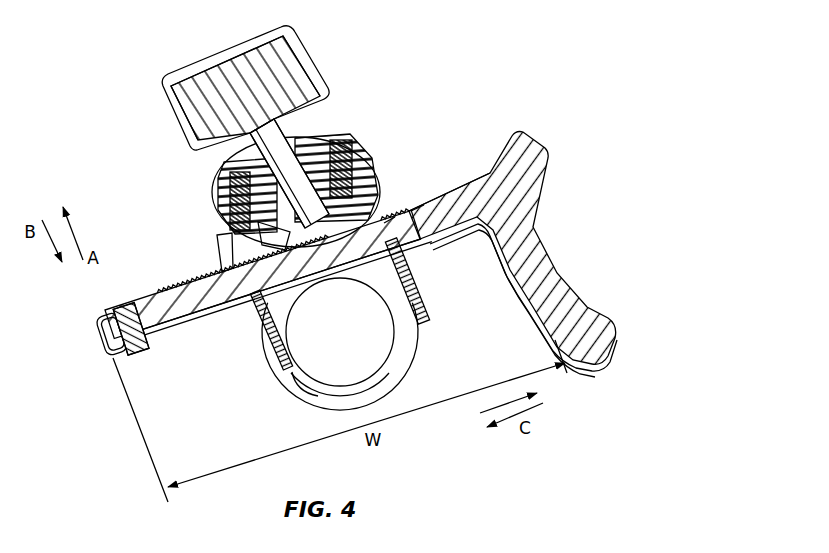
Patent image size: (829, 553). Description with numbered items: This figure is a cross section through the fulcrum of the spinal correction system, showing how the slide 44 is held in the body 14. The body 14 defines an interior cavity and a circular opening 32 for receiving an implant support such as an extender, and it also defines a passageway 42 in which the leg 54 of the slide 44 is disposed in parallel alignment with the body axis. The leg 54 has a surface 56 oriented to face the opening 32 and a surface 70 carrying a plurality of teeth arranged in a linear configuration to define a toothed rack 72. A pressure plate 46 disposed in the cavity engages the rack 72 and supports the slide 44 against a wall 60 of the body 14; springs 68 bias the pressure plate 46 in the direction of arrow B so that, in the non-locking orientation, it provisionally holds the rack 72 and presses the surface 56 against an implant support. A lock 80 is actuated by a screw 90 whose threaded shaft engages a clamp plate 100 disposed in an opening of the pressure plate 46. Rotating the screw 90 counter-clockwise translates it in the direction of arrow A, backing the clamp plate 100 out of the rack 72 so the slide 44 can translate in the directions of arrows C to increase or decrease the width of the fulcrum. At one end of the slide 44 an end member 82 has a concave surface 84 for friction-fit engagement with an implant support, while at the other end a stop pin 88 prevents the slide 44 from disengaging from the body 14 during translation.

The body 14 is at (335, 334).
The opening 32 is at (356, 357).
The passageway 42 is at (223, 262).
The slide 44 is at (472, 137).
The pressure plate 46 is at (237, 236).
The leg 54 is at (428, 200).
The surface 56 is at (268, 346).
The wall 60 is at (246, 314).
The springs 68 is at (345, 148).
The surface 70 is at (406, 207).
The toothed rack 72 is at (417, 213).
The lock 80 is at (128, 105).
The end member 82 is at (557, 293).
The surface 84 is at (543, 247).
The stop pin 88 is at (116, 310).
The screw 90 is at (208, 72).
The clamp plate 100 is at (394, 195).